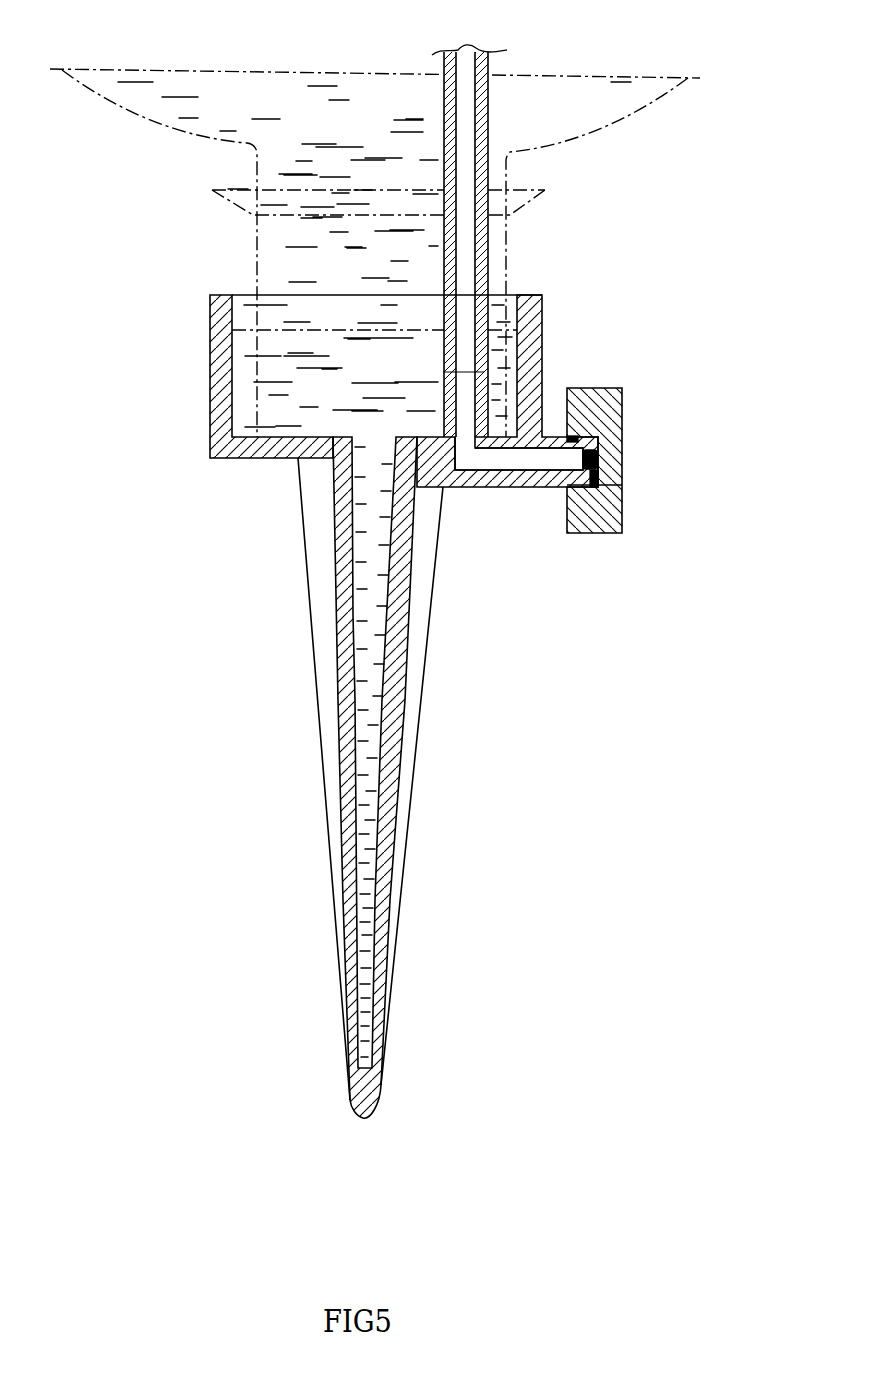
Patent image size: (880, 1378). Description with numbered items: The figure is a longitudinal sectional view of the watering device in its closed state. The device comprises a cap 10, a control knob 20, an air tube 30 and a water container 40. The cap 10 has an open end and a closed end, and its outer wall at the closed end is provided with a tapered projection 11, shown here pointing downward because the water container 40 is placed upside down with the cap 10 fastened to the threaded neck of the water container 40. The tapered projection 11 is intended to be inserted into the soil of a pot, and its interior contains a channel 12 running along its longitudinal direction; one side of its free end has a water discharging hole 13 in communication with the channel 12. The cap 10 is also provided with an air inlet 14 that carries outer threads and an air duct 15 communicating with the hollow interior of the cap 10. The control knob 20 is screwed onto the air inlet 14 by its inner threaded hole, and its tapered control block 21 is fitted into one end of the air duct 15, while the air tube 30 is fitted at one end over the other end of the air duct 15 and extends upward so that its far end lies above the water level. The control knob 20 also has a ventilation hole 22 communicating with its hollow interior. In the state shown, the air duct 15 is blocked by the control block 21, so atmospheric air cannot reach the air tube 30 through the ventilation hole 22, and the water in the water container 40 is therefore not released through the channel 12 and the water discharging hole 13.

The cap 10 is at (217, 397).
The tapered projection 11 is at (310, 615).
The channel 12 is at (368, 827).
The water discharging hole 13 is at (380, 917).
The air inlet 14 is at (553, 437).
The air duct 15 is at (518, 468).
The control knob 20 is at (618, 390).
The control block 21 is at (598, 448).
The ventilation hole 22 is at (598, 485).
The air tube 30 is at (500, 53).
The water container 40 is at (157, 113).